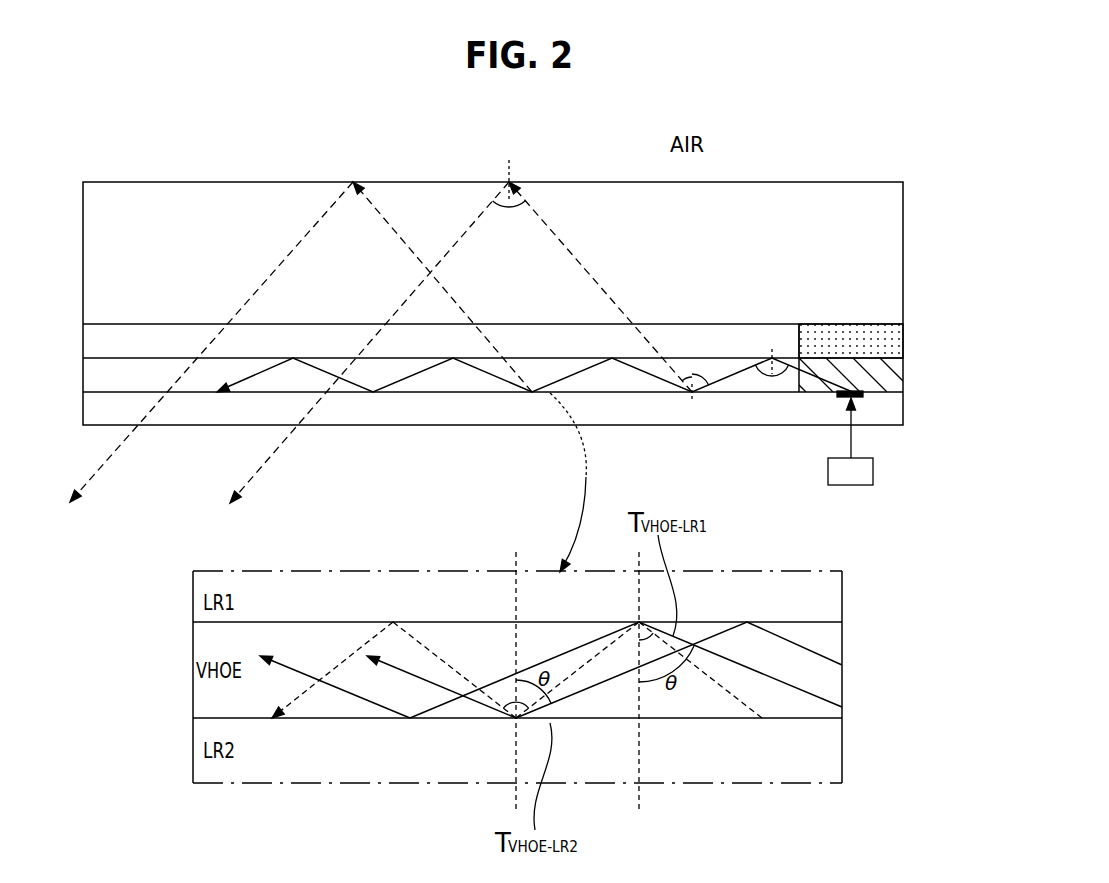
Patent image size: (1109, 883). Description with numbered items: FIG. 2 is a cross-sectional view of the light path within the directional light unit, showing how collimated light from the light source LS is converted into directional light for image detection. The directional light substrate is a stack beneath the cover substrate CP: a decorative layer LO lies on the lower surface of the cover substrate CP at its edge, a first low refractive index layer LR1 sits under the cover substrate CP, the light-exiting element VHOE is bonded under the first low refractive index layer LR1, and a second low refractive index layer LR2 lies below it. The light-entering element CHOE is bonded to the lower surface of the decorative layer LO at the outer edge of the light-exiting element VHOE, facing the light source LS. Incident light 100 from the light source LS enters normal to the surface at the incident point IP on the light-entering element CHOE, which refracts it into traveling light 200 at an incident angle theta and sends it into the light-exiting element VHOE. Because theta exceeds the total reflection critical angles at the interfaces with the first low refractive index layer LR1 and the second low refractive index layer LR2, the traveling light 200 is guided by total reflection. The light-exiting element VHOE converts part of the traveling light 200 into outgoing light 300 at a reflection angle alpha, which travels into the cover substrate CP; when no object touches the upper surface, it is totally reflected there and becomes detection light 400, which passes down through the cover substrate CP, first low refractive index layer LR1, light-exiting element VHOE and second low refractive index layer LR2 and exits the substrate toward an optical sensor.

The incident light 100 is at (852, 433).
The traveling light 200 is at (650, 374).
The outgoing light 300 is at (600, 285).
The detection light 400 is at (313, 398).
The cover substrate CP is at (892, 236).
The decorative layer LO is at (892, 343).
The light-entering element CHOE is at (892, 378).
The incident point IP is at (864, 396).
The light source LS is at (850, 441).
The first low refractive index layer LR1 is at (781, 345).
The second low refractive index layer LR2 is at (792, 410).
The light-exiting element VHOE is at (114, 378).